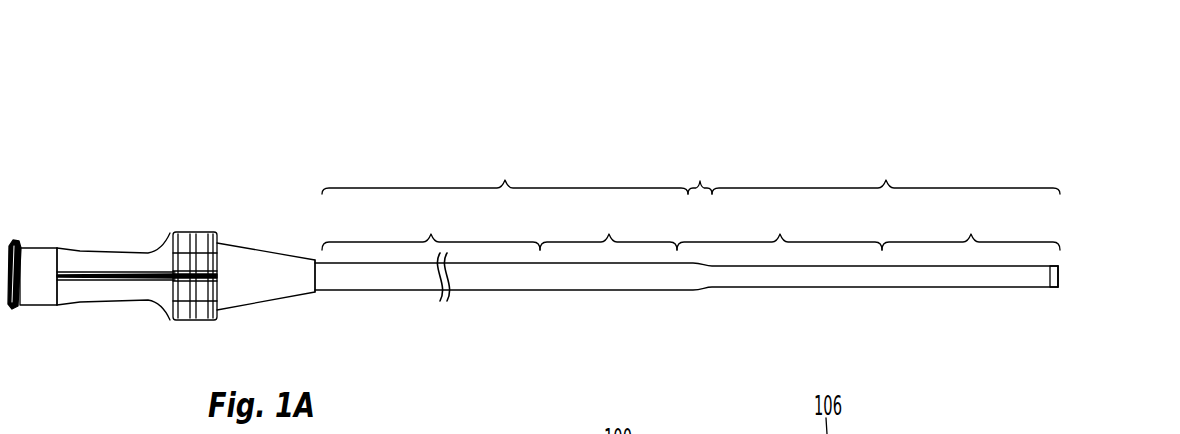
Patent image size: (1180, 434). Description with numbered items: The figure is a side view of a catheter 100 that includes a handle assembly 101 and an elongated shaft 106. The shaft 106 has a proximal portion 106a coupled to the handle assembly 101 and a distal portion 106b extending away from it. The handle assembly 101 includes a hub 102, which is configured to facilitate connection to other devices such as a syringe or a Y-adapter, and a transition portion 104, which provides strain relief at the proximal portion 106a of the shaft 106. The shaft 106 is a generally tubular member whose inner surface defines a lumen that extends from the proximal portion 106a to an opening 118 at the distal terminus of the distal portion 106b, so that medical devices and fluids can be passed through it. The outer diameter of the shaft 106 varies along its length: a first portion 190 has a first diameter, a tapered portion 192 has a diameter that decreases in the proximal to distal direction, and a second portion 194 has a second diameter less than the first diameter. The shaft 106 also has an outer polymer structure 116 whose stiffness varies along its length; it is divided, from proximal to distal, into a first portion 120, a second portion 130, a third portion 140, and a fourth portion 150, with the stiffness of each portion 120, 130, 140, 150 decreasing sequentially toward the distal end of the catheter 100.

The catheter 100 is at (282, 88).
The handle assembly 101 is at (184, 186).
The hub 102 is at (118, 262).
The transition portion 104 is at (271, 251).
The elongated shaft 106 is at (684, 118).
The proximal portion 106a is at (331, 151).
The distal portion 106b is at (1047, 151).
The outer polymer structure 116 is at (575, 291).
The opening 118 is at (1068, 277).
The first portion 120 is at (431, 226).
The second portion 130 is at (608, 226).
The third portion 140 is at (779, 226).
The fourth portion 150 is at (971, 226).
The first portion 190 is at (505, 168).
The tapered portion 192 is at (698, 168).
The second portion 194 is at (886, 170).